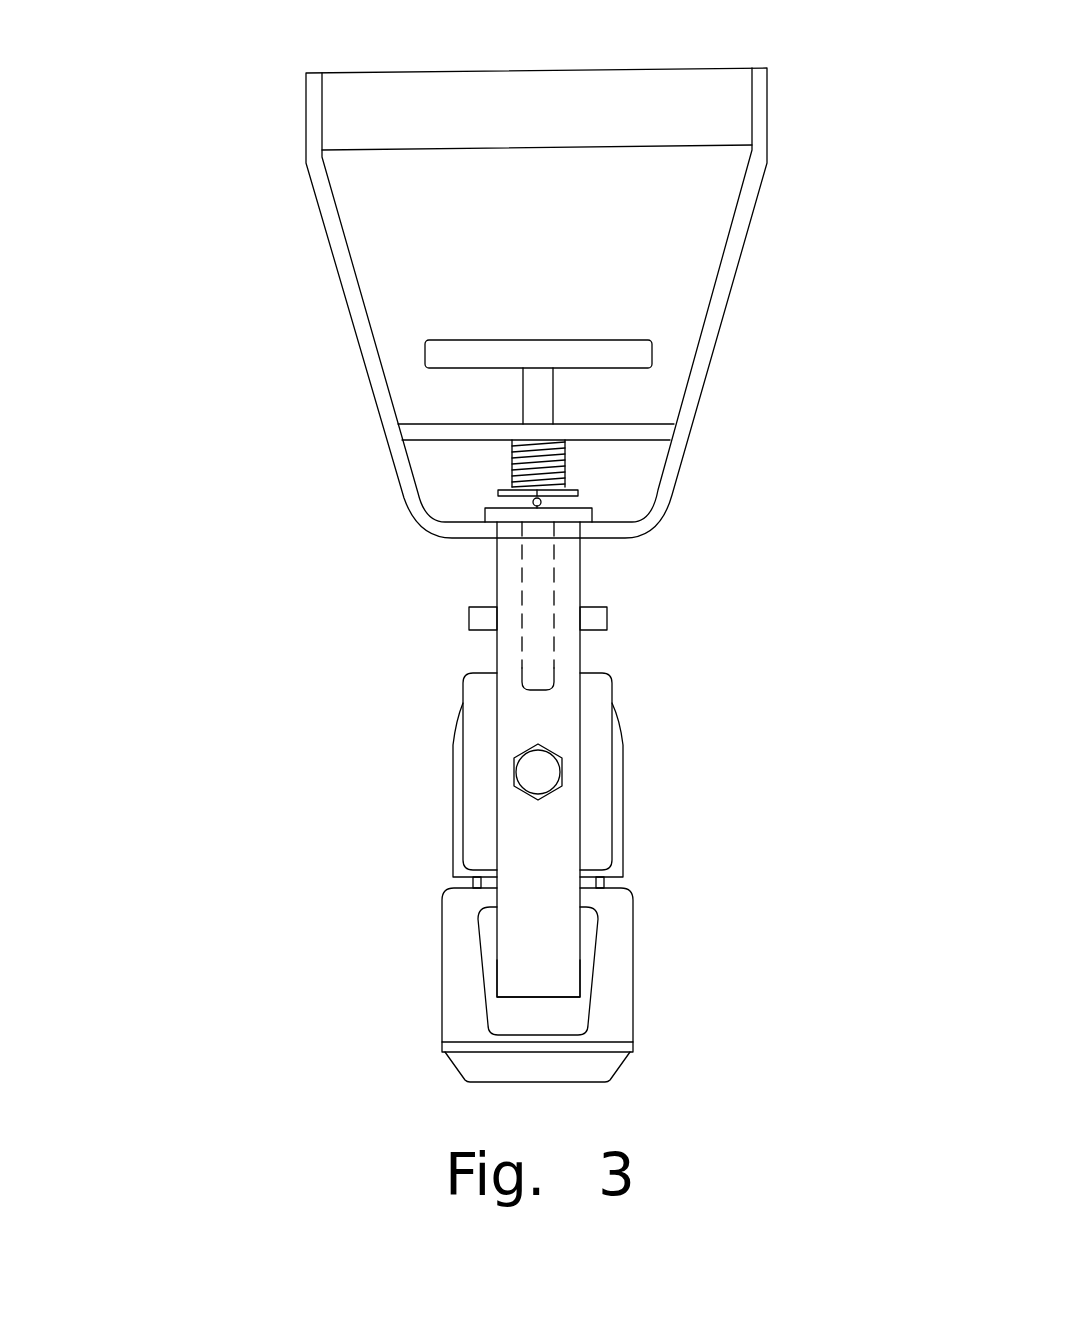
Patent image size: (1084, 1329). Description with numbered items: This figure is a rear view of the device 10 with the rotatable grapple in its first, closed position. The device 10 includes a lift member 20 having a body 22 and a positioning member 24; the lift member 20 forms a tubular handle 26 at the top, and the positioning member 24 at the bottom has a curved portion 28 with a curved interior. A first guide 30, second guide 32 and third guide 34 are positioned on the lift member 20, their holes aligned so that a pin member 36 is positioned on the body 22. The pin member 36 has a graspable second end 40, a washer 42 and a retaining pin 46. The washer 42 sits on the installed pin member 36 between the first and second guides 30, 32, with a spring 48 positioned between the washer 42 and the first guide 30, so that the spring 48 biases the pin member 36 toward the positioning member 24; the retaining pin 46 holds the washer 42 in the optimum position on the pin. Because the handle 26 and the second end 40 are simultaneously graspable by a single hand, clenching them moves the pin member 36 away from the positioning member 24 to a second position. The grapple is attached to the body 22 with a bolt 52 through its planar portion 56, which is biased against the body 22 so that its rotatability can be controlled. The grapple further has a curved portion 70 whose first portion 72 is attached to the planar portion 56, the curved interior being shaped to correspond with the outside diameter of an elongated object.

The device 10 is at (243, 165).
The lift member 20 is at (763, 198).
The body 22 is at (580, 652).
The positioning member 24 is at (493, 947).
The tubular handle 26 is at (543, 98).
The curved portion 28 is at (590, 1020).
The first guide 30 is at (607, 422).
The second guide 32 is at (575, 508).
The third guide 34 is at (588, 605).
The pin member 36 is at (523, 398).
The graspable second end 40 is at (538, 340).
The washer 42 is at (498, 495).
The retaining pin 46 is at (534, 505).
The spring 48 is at (512, 468).
The bolt 52 is at (558, 786).
The planar portion 56 is at (623, 772).
The curved portion 70 is at (580, 1082).
The first portion 72 is at (442, 995).